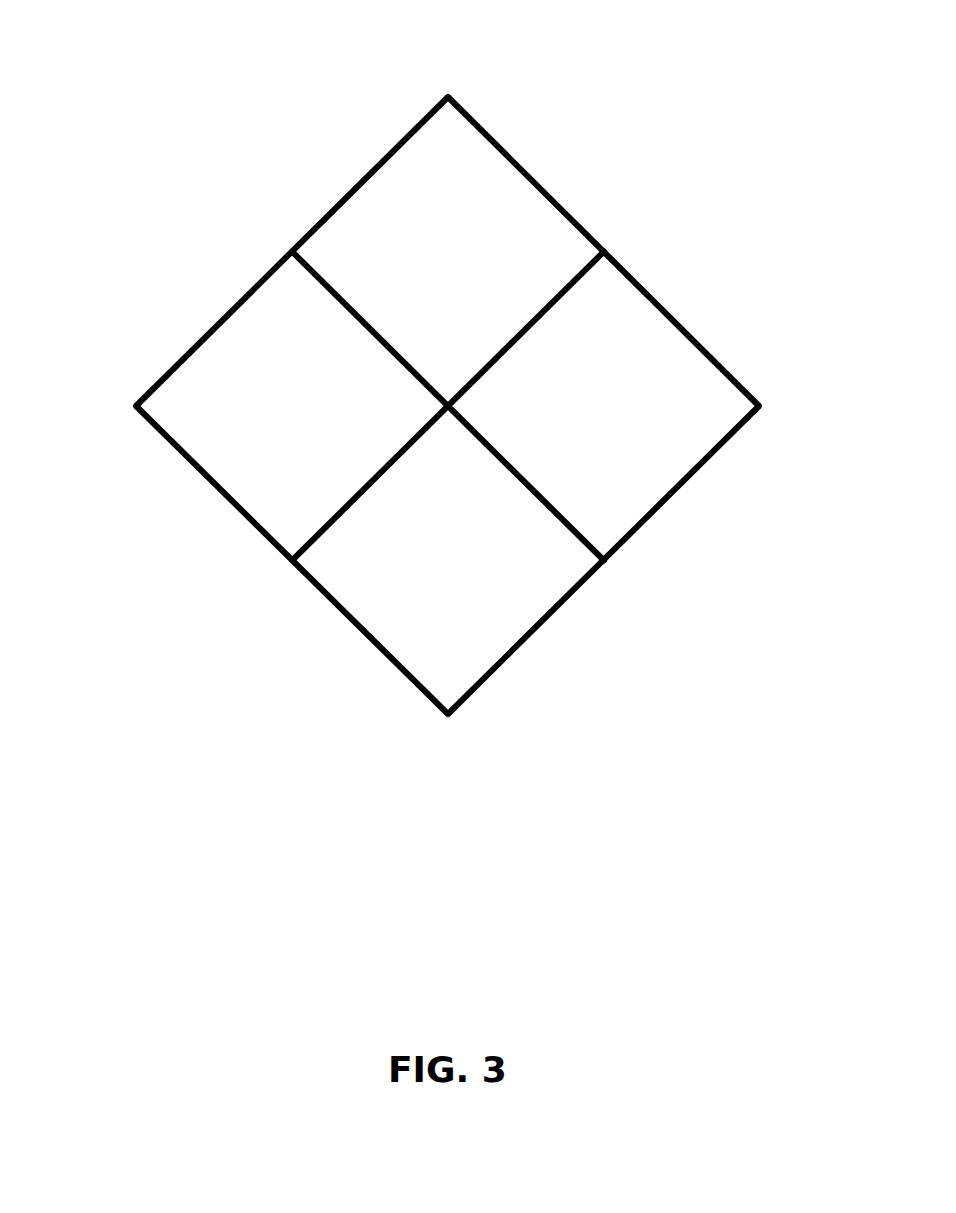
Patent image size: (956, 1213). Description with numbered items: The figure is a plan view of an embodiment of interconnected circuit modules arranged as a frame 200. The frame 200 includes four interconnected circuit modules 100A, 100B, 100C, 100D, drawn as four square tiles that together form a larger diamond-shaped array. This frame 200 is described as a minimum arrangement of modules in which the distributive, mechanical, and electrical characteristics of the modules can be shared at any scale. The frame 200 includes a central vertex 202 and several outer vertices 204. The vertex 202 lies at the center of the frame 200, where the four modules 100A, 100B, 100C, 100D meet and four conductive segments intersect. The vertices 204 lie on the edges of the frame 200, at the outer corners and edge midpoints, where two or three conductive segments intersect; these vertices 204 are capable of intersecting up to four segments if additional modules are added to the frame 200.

The frame 200 is at (124, 210).
The vertex 202 is at (450, 406).
The vertices 204 is at (448, 97).
The circuit module 100A is at (448, 251).
The circuit module 100B is at (292, 406).
The circuit module 100C is at (603, 406).
The circuit module 100D is at (448, 560).